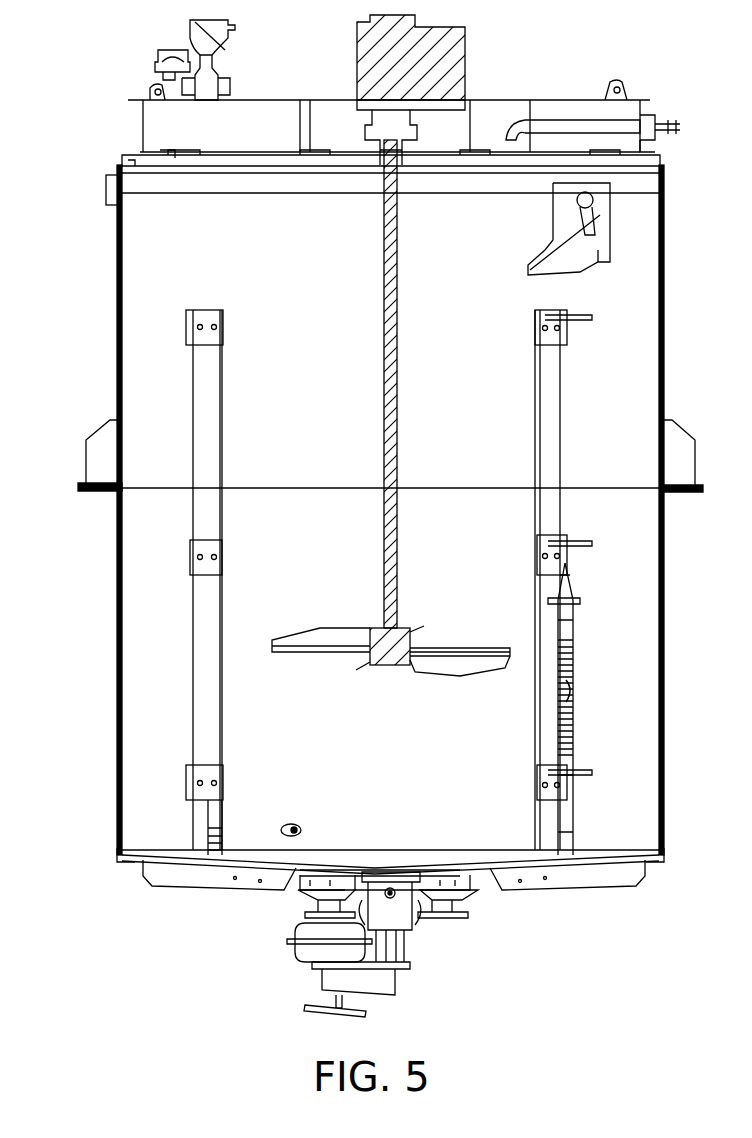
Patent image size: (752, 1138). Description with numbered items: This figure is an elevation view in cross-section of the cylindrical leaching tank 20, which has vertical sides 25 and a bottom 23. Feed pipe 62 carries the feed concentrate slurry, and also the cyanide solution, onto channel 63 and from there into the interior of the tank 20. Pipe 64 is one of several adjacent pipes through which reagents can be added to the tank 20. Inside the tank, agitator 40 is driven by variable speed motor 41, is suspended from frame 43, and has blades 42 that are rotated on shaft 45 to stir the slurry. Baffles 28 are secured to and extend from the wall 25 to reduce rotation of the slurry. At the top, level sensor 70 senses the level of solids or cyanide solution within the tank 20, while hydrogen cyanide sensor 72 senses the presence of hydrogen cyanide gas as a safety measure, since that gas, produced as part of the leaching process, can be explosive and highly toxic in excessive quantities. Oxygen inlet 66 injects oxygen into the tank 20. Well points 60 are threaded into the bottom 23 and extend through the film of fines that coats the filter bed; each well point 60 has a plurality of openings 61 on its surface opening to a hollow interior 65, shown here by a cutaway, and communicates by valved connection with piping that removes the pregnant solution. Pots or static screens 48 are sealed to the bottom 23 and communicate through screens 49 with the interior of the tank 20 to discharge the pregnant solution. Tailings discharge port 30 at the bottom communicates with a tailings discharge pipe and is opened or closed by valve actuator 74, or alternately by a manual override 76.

The leaching tank 20 is at (117, 580).
The bottom 23 is at (438, 848).
The vertical sides 25 is at (313, 371).
The baffles 28 is at (197, 405).
The tailings discharge port 30 is at (411, 916).
The agitator 40 is at (385, 596).
The variable speed motor 41 is at (380, 50).
The blades 42 is at (462, 656).
The frame 43 is at (280, 112).
The shaft 45 is at (400, 437).
The static screens 48 is at (322, 896).
The screens 49 is at (462, 864).
The well points 60 is at (574, 662).
The openings 61 is at (574, 735).
The feed pipe 62 is at (580, 210).
The channel 63 is at (525, 256).
The pipe 64 is at (583, 122).
The hollow interior 65 is at (574, 690).
The oxygen inlet 66 is at (303, 830).
The level sensor 70 is at (190, 38).
The hydrogen cyanide sensor 72 is at (160, 70).
The valve actuator 74 is at (300, 946).
The manual override 76 is at (318, 1008).